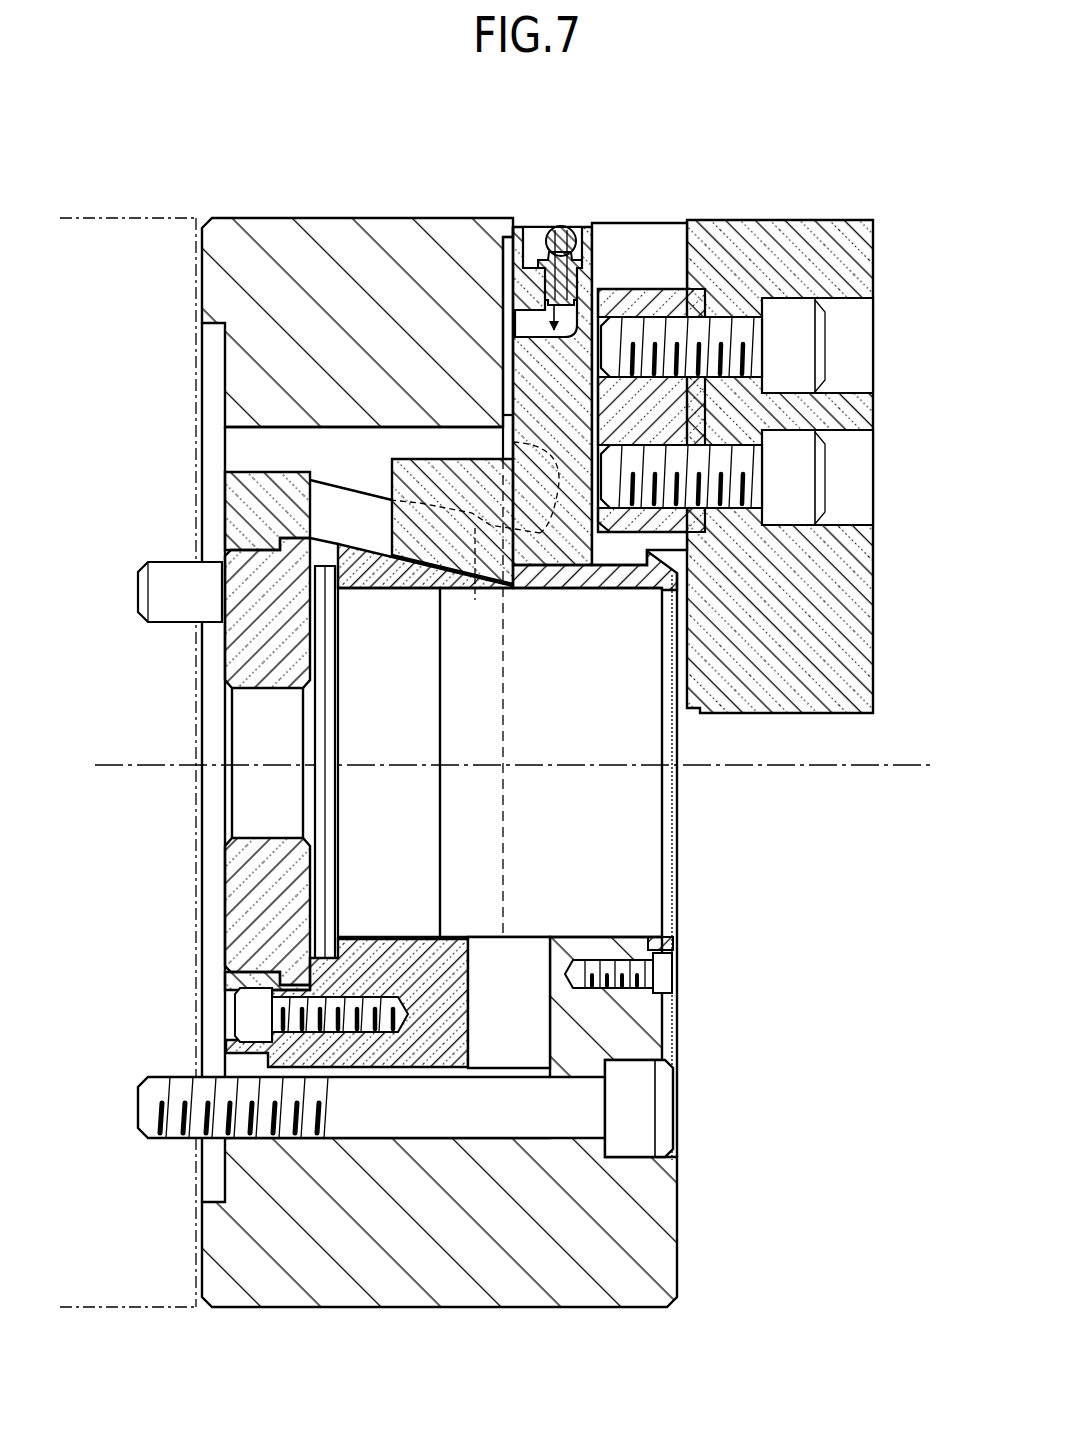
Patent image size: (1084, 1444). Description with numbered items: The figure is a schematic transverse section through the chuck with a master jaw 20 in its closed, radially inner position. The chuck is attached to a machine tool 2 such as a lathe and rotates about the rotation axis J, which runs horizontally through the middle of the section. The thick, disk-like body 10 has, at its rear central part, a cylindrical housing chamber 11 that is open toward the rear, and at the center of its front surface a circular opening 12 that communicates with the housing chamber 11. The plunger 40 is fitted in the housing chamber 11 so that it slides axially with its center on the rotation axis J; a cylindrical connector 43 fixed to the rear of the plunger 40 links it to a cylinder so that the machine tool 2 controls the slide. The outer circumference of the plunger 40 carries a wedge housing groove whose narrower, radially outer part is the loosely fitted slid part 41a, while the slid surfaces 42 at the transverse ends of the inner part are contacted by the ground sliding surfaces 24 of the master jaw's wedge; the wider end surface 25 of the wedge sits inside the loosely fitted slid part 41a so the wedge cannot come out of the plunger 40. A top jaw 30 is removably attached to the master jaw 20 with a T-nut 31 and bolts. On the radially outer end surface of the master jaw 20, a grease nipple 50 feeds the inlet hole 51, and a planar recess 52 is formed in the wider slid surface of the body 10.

The machine tool 2 is at (112, 215).
The body 10 is at (328, 225).
The housing chamber 11 is at (360, 430).
The circular opening 12 is at (634, 935).
The master jaw 20 is at (641, 237).
The sliding surface 24 is at (435, 553).
The wider end surface 25 is at (518, 522).
The top jaw 30 is at (805, 235).
The T-nut 31 is at (650, 300).
The plunger 40 is at (386, 942).
The loosely fitted slid part 41a is at (428, 442).
The slid surface 42 is at (372, 500).
The connector 43 is at (282, 907).
The grease nipple 50 is at (556, 226).
The inlet hole 51 is at (545, 290).
The planar recess 52 is at (468, 308).
The rotation axis J is at (888, 770).